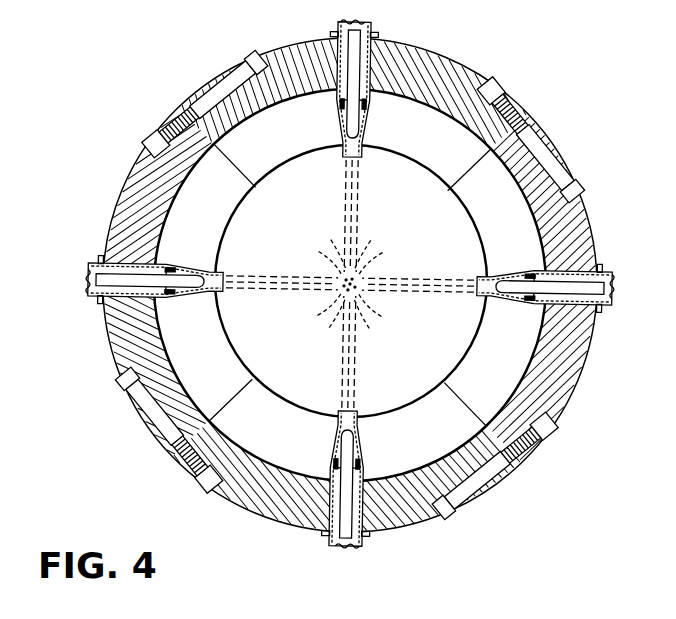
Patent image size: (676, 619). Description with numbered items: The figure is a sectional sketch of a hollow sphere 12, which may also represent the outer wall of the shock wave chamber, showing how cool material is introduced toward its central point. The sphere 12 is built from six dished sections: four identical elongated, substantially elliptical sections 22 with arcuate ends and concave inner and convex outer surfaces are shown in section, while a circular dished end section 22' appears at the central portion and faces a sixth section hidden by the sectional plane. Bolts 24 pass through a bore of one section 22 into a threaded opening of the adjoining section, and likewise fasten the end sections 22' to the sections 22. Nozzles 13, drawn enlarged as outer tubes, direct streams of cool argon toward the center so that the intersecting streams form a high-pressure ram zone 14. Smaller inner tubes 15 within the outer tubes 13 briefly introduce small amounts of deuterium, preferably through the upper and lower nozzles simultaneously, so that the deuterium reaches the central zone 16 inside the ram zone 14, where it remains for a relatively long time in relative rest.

The hollow sphere 12 is at (455, 72).
The nozzle 13 is at (366, 121).
The ram zone 14 is at (325, 266).
The inner tube 15 is at (352, 116).
The central zone 16 is at (357, 280).
The section 22 is at (344, 285).
The end section 22' is at (351, 281).
The bolt 24 is at (578, 180).